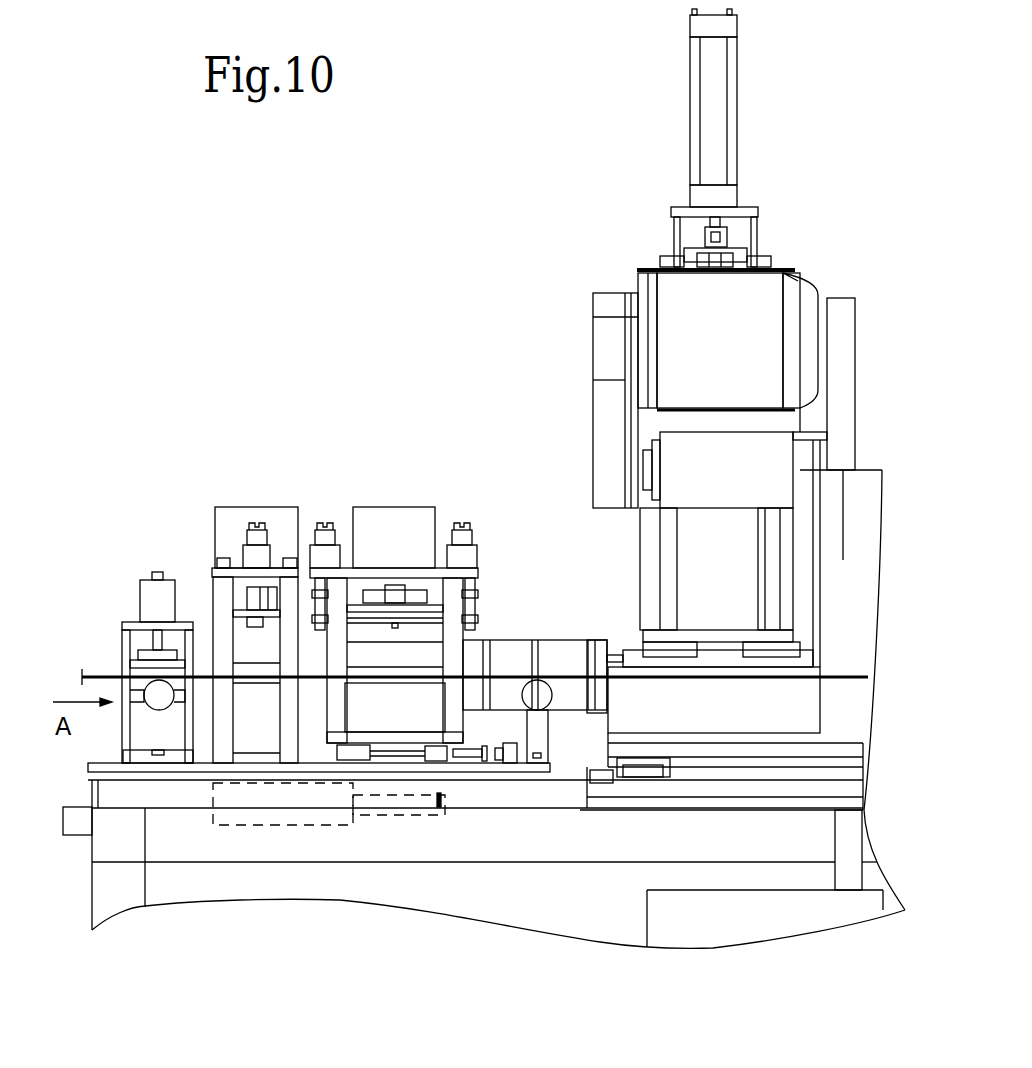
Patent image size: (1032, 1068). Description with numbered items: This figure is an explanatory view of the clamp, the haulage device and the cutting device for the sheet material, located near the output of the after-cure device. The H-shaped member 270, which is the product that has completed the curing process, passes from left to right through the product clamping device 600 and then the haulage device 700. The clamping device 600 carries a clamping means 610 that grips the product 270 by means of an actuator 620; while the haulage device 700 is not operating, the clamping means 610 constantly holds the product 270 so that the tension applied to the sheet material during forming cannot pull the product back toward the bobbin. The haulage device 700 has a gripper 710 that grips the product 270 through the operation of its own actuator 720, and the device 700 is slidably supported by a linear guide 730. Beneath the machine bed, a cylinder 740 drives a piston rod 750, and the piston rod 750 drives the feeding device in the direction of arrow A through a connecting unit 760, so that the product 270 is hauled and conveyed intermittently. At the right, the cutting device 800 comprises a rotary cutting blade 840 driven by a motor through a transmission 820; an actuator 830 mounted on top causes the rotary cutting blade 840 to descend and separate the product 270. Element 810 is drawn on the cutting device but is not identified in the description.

The H-shaped member 270 is at (102, 670).
The product clamping device 600 is at (230, 515).
The clamping means 610 is at (255, 668).
The actuator 620 is at (262, 553).
The haulage device 700 is at (392, 528).
The gripper 710 is at (428, 667).
The actuator 720 is at (465, 555).
The linear guide 730 is at (440, 762).
The cylinder 740 is at (270, 817).
The piston rod 750 is at (383, 802).
The connecting unit 760 is at (441, 798).
The cutting device 800 is at (782, 190).
The upper die 810 is at (763, 327).
The transmission 820 is at (612, 452).
The actuator 830 is at (707, 140).
The rotary cutting blade 840 is at (843, 518).